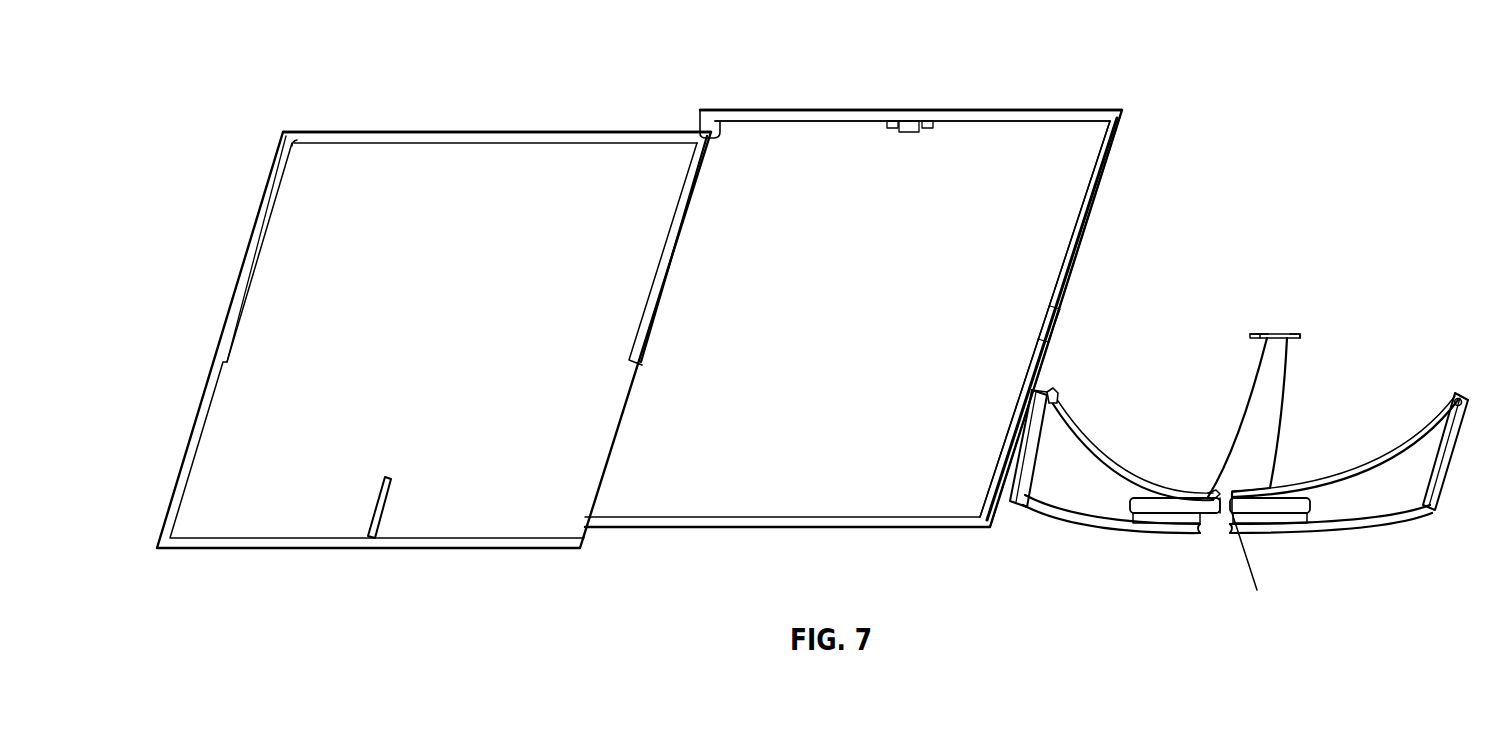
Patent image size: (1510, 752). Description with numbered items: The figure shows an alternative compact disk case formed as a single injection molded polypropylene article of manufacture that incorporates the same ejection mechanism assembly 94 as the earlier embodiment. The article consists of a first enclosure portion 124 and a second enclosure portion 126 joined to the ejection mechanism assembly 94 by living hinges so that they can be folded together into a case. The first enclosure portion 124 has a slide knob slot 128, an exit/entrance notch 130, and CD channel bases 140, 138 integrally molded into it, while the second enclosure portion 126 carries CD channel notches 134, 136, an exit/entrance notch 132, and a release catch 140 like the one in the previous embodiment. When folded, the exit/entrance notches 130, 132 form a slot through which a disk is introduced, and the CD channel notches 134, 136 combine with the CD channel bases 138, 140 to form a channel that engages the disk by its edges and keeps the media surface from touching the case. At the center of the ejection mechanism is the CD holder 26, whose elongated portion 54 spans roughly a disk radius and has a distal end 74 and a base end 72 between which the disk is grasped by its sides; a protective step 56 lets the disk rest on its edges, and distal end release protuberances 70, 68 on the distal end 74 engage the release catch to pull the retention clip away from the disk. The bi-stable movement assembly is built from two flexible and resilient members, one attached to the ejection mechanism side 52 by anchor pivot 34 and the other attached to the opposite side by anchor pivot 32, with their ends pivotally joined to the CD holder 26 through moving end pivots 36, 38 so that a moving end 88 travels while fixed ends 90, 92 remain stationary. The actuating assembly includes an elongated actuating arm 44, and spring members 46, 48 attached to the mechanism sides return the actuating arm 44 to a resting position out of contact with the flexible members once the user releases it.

The CD holder 26 is at (1268, 439).
The anchor pivot 32 is at (1057, 406).
The anchor pivot 34 is at (1455, 401).
The moving end pivot 36 is at (1208, 515).
The moving end pivot 38 is at (1257, 590).
The actuating arm 44 is at (1287, 517).
The spring member 46 is at (1068, 527).
The spring member 48 is at (1360, 518).
The ejection mechanism side 52 is at (1447, 455).
The elongated portion 54 is at (1034, 467).
The protective step 56 is at (1234, 423).
The distal end release protuberance 68 is at (1250, 335).
The distal end release protuberance 70 is at (1298, 335).
The base end 72 is at (1274, 455).
The distal end 74 is at (1264, 315).
The moving end 88 is at (1168, 480).
The fixed end 90 is at (1045, 385).
The fixed end 92 is at (1455, 388).
The ejection mechanism assembly 94 is at (1205, 546).
The first enclosure portion 124 is at (340, 252).
The second enclosure portion 126 is at (1068, 131).
The slide knob slot 128 is at (380, 523).
The exit/entrance notch 130 is at (484, 132).
The exit/entrance notch 132 is at (769, 112).
The CD channel notch 134 is at (1087, 208).
The CD channel notch 136 is at (728, 112).
The CD channel base 138 is at (649, 343).
The CD channel base 140 is at (228, 316).